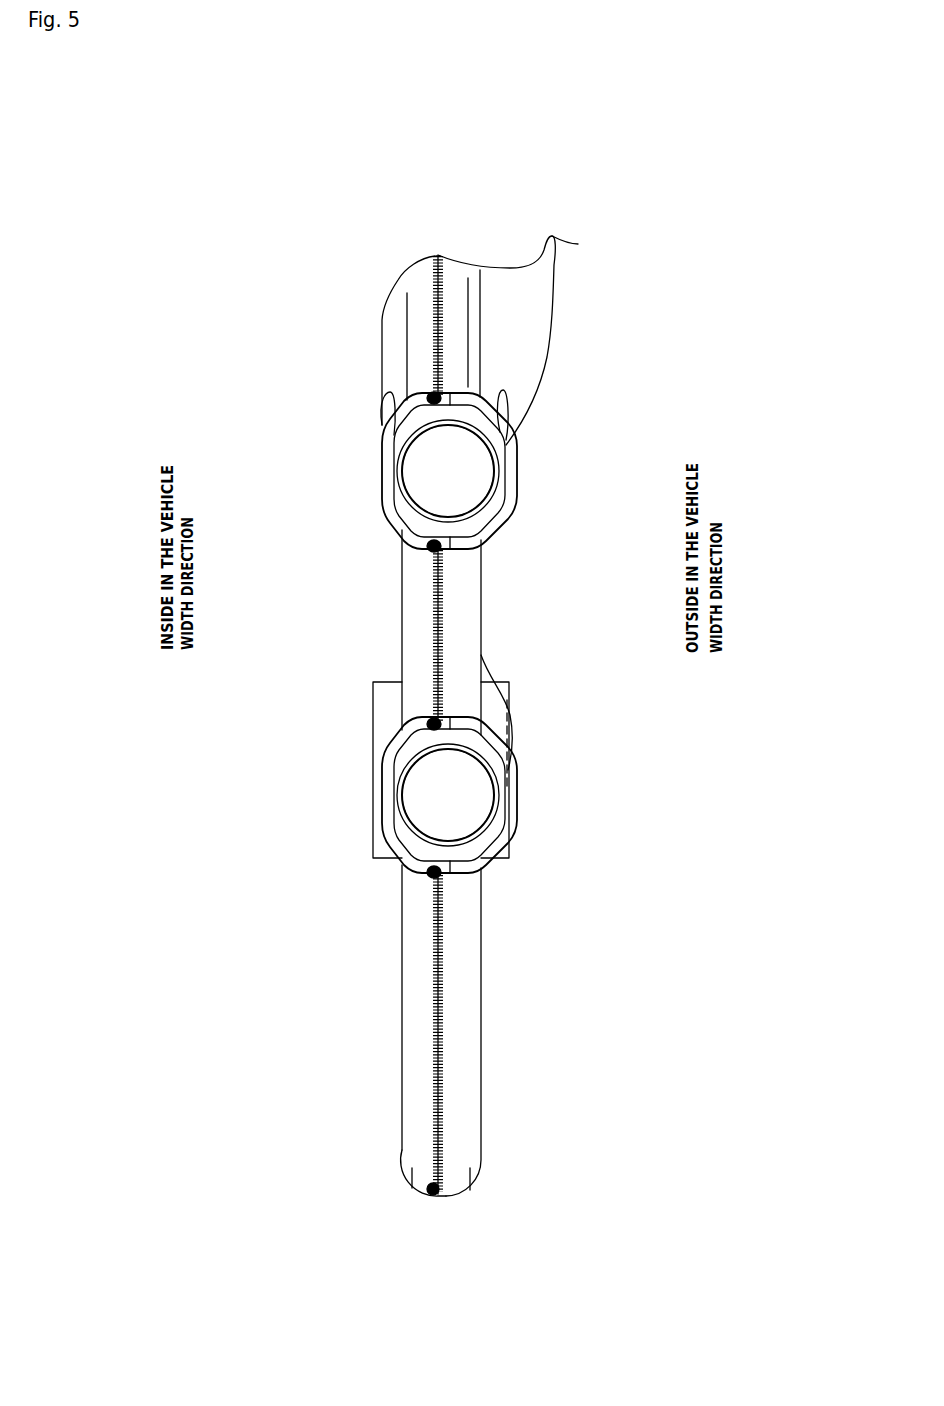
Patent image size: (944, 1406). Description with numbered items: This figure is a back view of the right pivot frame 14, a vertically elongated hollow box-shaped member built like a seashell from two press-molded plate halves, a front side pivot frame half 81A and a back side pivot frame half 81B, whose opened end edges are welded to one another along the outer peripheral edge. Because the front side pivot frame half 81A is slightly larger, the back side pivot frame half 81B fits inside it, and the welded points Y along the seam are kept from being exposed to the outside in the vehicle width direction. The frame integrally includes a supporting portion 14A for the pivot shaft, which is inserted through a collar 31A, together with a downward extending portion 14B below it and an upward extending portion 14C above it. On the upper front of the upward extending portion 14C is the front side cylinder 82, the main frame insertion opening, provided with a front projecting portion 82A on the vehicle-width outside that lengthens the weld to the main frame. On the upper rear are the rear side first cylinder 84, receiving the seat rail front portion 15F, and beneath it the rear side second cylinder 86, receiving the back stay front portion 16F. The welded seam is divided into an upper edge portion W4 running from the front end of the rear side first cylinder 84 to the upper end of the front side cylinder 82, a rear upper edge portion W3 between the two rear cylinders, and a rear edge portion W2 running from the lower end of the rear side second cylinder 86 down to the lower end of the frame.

The pivot frame 14 is at (547, 142).
The supporting portion 14A is at (402, 652).
The downward extending portion 14B is at (482, 1040).
The upward extending portion 14C is at (482, 575).
The seat rail front portion 15F is at (400, 448).
The back stay front portion 16F is at (400, 786).
The collar 31A is at (510, 692).
The front side pivot frame half 81A is at (465, 1167).
The back side pivot frame half 81B is at (413, 1168).
The front side cylinder 82 is at (458, 335).
The front projecting portion 82A is at (578, 244).
The rear side first cylinder 84 is at (517, 476).
The rear side second cylinder 86 is at (517, 806).
The rear edge portion W2 is at (443, 975).
The rear upper edge portion W3 is at (443, 622).
The upper edge portion W4 is at (438, 308).
The welded points Y is at (435, 256).